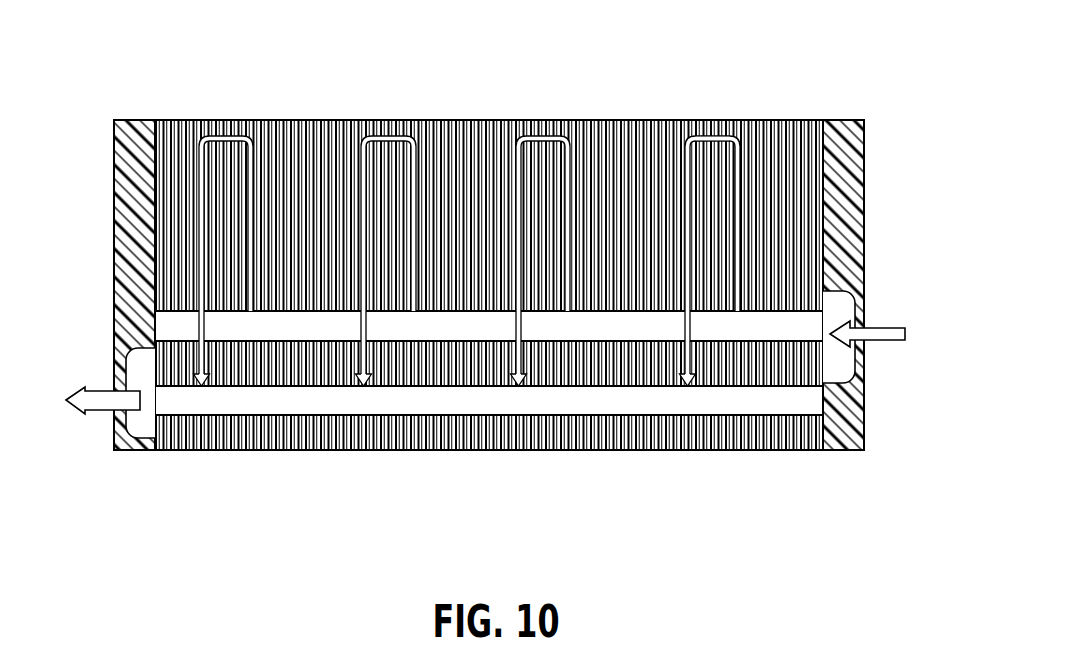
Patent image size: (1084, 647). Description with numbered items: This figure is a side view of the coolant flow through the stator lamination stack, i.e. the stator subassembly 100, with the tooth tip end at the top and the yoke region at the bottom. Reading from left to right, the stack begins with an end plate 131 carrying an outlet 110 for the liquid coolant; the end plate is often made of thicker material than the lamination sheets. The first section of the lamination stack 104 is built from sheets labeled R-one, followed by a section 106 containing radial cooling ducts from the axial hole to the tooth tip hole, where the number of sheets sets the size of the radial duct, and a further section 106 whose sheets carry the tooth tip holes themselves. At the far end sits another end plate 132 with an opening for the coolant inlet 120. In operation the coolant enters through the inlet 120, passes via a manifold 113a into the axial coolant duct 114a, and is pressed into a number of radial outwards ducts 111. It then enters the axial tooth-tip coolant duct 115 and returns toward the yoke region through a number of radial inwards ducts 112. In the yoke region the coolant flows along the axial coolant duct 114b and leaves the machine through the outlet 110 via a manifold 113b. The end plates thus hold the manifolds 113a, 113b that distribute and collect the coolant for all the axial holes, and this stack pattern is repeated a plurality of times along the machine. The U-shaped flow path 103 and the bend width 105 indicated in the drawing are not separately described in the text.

The stator subassembly 100 is at (268, 468).
The U-shaped tube 103 is at (219, 166).
The first section of the lamination stack 104 is at (352, 124).
The tube bend width 105 is at (553, 124).
The section with radial cooling ducts 106 is at (363, 124).
The outlet 110 is at (90, 392).
The radial outwards ducts 111 is at (732, 193).
The radial inwards ducts 112 is at (677, 159).
The manifold 113a is at (828, 352).
The manifold 113b is at (133, 408).
The axial coolant duct 114a is at (323, 325).
The axial coolant duct 114b is at (465, 400).
The axial tooth-tip coolant duct 115 is at (727, 128).
The inlet 120 is at (876, 326).
The end plate 131 is at (121, 120).
The end plate 132 is at (848, 158).